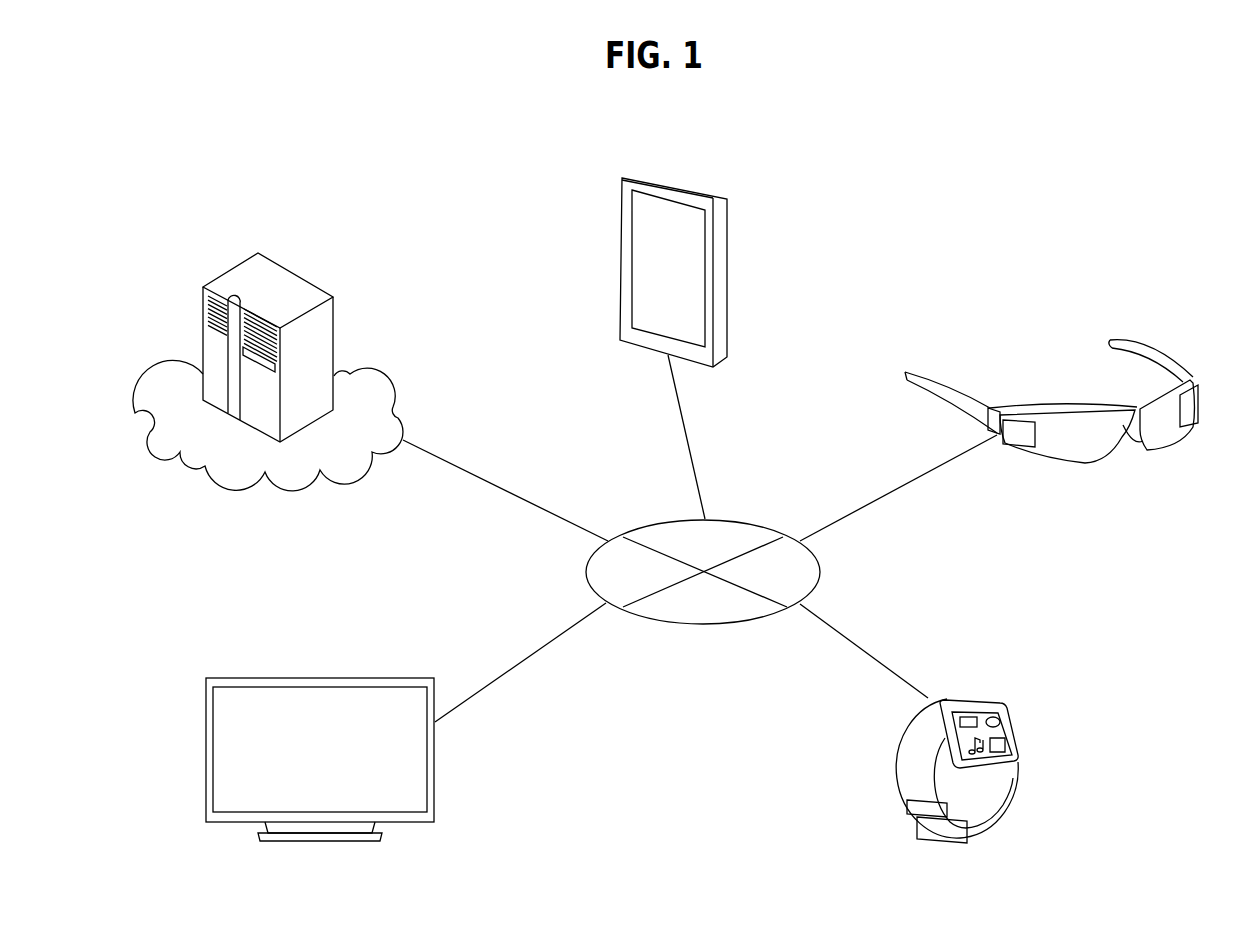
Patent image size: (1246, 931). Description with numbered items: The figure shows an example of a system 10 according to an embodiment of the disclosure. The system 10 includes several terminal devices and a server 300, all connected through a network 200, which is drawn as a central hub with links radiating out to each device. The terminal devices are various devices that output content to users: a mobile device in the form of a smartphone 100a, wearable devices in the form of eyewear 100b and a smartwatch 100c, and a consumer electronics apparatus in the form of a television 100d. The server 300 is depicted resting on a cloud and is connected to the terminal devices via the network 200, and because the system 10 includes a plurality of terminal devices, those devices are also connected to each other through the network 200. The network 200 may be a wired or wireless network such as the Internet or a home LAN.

The system 10 is at (925, 168).
The smartphone 100a is at (683, 182).
The eyewear 100b is at (1178, 357).
The smartwatch 100c is at (1015, 731).
The television 100d is at (358, 678).
The network 200 is at (755, 522).
The server 300 is at (287, 267).